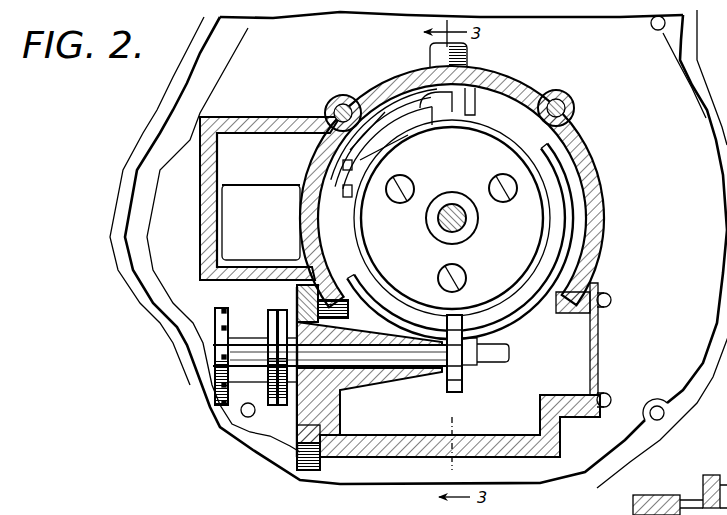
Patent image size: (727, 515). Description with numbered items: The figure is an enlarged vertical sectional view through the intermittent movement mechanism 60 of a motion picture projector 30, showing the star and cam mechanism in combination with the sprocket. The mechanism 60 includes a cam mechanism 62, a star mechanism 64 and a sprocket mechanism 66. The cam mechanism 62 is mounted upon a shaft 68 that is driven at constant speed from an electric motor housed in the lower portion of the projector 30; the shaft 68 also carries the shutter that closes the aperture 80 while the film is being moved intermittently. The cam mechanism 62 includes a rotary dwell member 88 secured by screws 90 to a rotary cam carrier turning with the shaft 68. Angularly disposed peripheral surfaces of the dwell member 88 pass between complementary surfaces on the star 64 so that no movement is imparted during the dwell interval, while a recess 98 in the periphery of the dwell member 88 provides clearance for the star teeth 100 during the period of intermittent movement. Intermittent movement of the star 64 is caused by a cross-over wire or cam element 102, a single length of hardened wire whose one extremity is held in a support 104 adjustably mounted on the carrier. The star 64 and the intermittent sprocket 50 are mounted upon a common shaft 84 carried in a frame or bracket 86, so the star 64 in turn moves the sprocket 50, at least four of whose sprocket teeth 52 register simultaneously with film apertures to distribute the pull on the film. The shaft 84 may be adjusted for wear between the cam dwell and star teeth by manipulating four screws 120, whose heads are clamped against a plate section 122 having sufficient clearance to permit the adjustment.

The motion picture projector 30 is at (145, 118).
The intermittent sprocket 50 is at (227, 340).
The sprocket teeth 52 is at (219, 357).
The intermittent movement mechanism 60 is at (564, 345).
The cam mechanism 62 is at (529, 223).
The star mechanism 64 is at (469, 385).
The sprocket mechanism 66 is at (212, 373).
The shaft 68 is at (453, 208).
The aperture 80 is at (270, 198).
The shaft 84 is at (408, 360).
The frame or bracket 86 is at (353, 380).
The dwell member 88 is at (563, 184).
The screws 90 is at (444, 271).
The recess 98 is at (403, 143).
The star teeth 100 is at (447, 387).
The cross-over wire or cam element 102 is at (360, 100).
The support 104 is at (485, 92).
The screws 120 is at (295, 300).
The plate section 122 is at (300, 428).